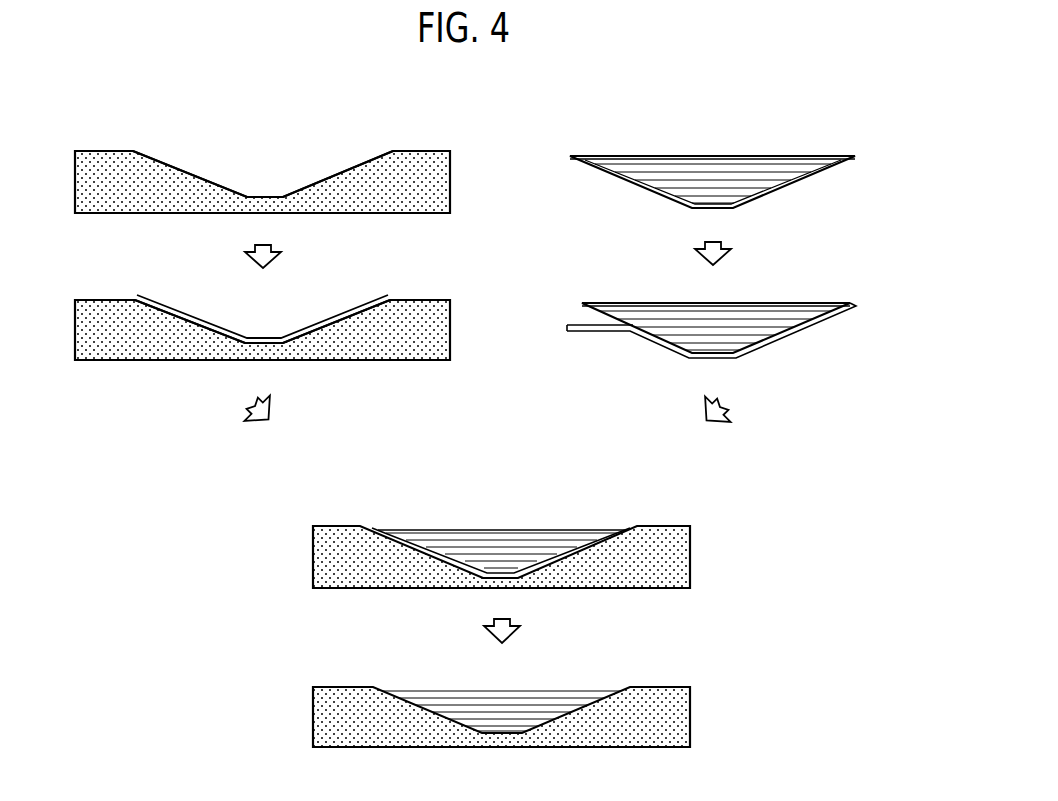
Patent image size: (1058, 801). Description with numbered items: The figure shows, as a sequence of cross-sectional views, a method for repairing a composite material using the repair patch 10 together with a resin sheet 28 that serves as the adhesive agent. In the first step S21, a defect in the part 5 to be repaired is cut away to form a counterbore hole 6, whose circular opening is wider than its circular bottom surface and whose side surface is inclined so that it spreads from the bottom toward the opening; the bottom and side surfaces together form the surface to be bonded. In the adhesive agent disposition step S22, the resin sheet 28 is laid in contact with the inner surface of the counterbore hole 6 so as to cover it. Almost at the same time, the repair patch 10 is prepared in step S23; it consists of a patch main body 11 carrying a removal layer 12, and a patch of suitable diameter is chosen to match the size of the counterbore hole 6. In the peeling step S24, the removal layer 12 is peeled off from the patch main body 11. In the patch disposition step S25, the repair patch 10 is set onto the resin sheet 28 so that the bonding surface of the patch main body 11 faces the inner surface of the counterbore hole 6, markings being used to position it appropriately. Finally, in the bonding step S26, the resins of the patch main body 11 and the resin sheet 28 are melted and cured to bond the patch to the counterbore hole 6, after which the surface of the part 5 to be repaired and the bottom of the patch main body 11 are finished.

The part to be repaired 5 is at (75, 185).
The counterbore hole 6 is at (167, 166).
The resin sheet 28 is at (364, 303).
The repair patch 10 is at (735, 149).
The patch main body 11 is at (630, 310).
The removal layer 12 is at (603, 333).
The counterbore hole forming step S21 is at (276, 159).
The adhesive agent disposition step S22 is at (297, 300).
The repair patch preparation step S23 is at (740, 148).
The peeling step S24 is at (740, 307).
The patch disposition step S25 is at (719, 538).
The bonding step S26 is at (719, 708).